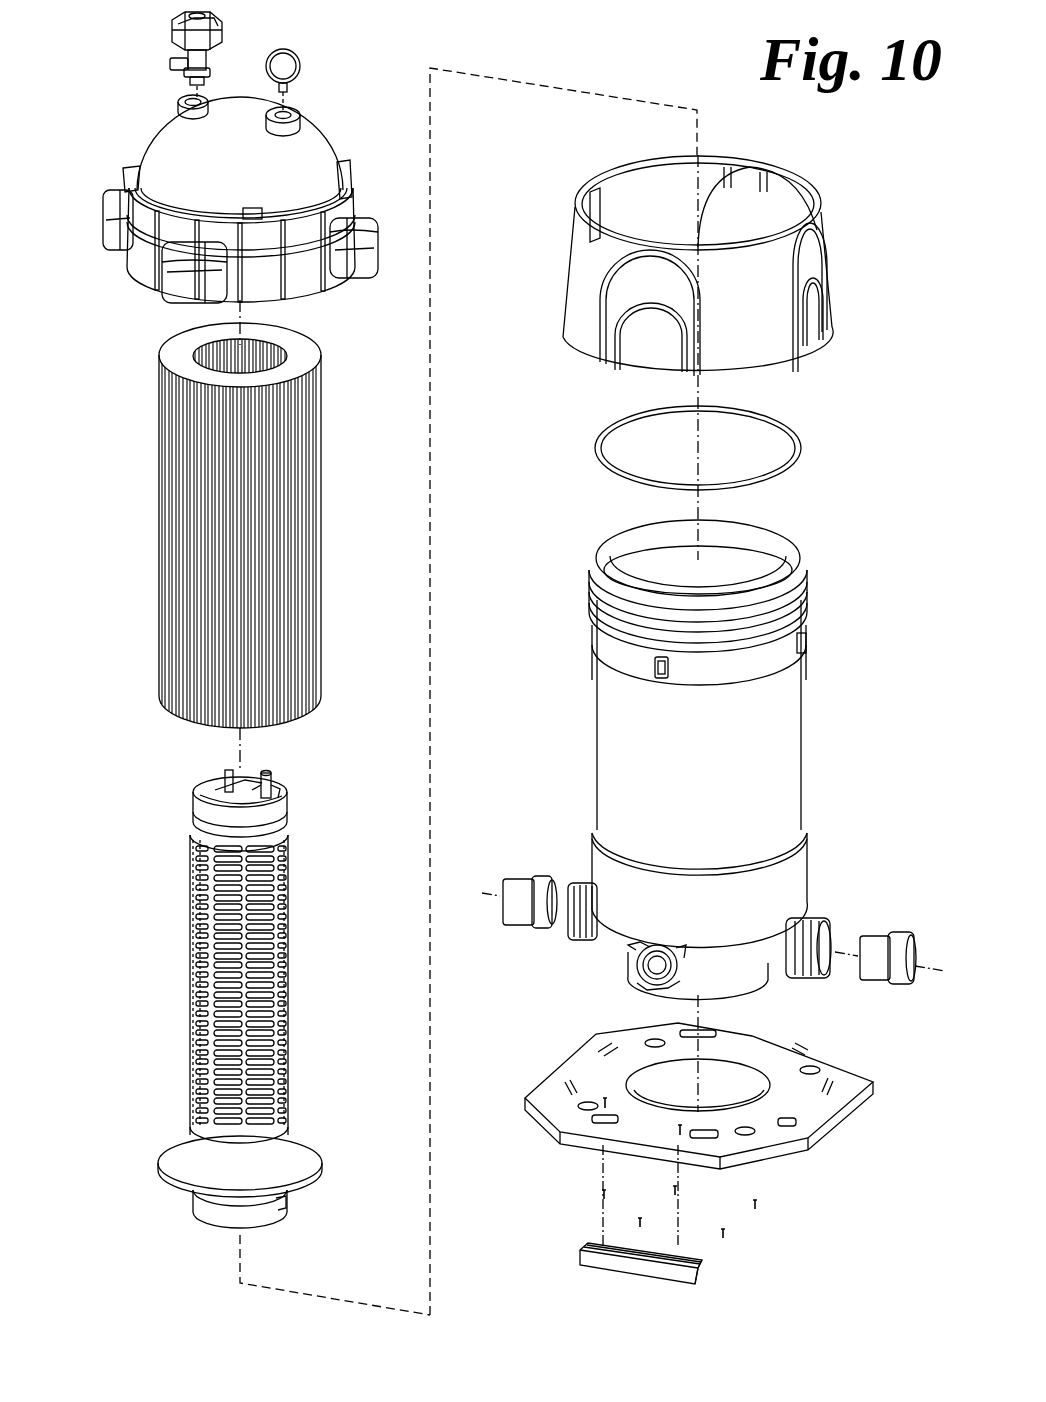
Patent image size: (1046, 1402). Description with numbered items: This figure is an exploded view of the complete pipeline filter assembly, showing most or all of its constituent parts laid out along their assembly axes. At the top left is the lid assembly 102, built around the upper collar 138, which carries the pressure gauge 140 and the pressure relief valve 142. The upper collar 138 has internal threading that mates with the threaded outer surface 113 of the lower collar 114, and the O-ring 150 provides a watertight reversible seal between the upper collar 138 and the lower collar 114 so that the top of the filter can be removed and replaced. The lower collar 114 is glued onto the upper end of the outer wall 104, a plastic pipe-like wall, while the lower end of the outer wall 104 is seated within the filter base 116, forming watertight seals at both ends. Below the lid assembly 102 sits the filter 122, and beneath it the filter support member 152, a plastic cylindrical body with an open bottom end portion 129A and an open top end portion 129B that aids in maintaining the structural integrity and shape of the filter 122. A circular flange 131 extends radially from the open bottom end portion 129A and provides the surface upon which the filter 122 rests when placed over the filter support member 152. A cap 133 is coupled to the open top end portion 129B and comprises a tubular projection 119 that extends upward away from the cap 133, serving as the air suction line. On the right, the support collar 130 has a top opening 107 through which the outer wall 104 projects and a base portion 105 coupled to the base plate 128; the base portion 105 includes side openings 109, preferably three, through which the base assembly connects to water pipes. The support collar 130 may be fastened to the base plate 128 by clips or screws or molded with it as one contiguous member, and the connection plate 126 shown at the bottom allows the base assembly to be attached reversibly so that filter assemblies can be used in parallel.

The lid assembly 102 is at (122, 78).
The outer wall 104 is at (773, 777).
The base portion 105 is at (757, 353).
The top opening 107 is at (643, 190).
The side openings 109 is at (818, 308).
The outer surface 113 is at (826, 593).
The lower collar 114 is at (778, 657).
The filter base 116 is at (788, 885).
The tubular projection 119 is at (268, 776).
The filter 122 is at (158, 575).
The connection plate 126 is at (622, 1265).
The base plate 128 is at (842, 1067).
The open bottom end portion 129A is at (130, 1158).
The open top end portion 129B is at (308, 814).
The support collar 130 is at (583, 277).
The circular flange 131 is at (302, 1160).
The cap 133 is at (202, 822).
The upper collar 138 is at (145, 263).
The pressure gauge 140 is at (300, 62).
The pressure relief valve 142 is at (215, 35).
The O-ring 150 is at (805, 450).
The filter support member 152 is at (195, 1000).